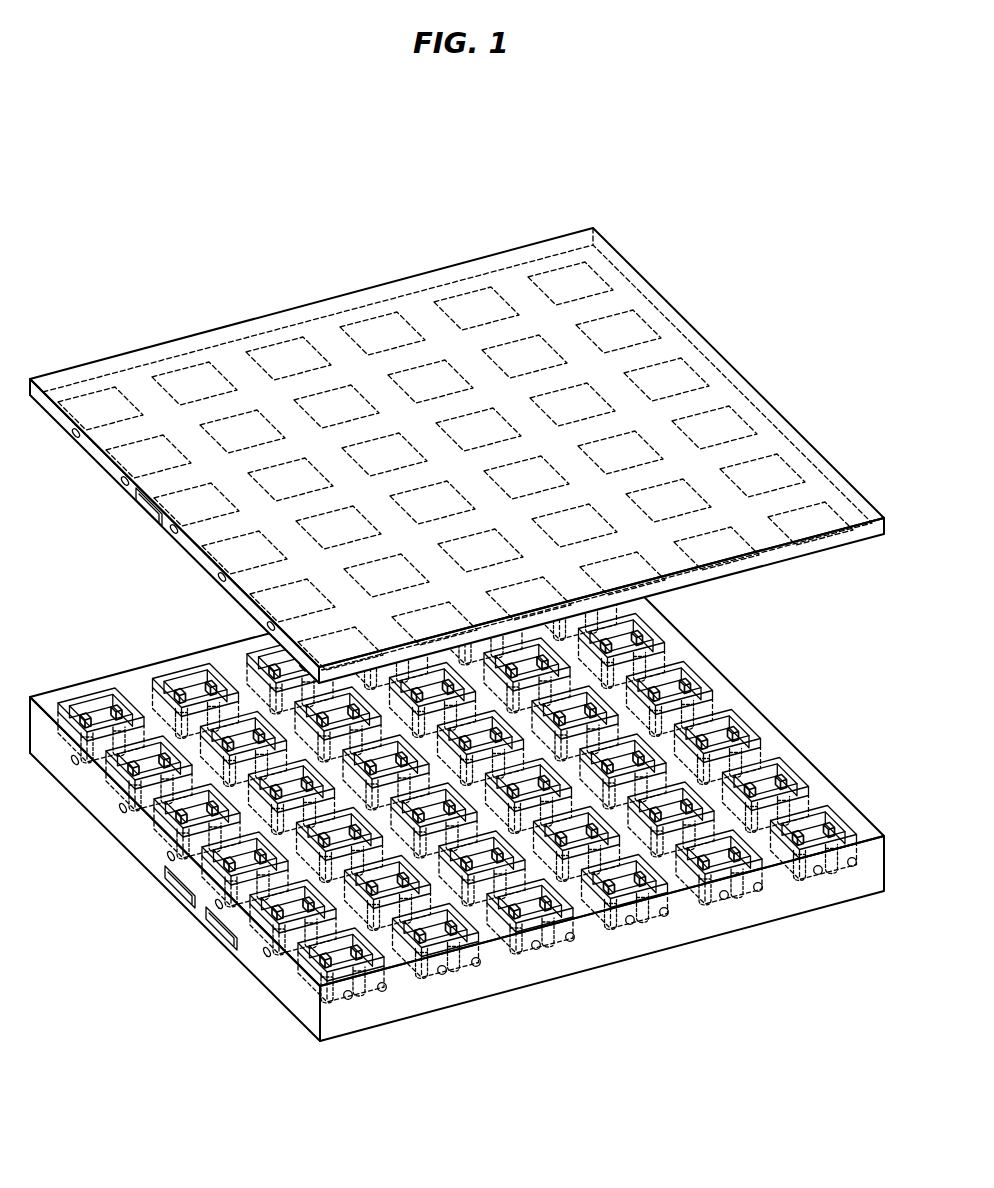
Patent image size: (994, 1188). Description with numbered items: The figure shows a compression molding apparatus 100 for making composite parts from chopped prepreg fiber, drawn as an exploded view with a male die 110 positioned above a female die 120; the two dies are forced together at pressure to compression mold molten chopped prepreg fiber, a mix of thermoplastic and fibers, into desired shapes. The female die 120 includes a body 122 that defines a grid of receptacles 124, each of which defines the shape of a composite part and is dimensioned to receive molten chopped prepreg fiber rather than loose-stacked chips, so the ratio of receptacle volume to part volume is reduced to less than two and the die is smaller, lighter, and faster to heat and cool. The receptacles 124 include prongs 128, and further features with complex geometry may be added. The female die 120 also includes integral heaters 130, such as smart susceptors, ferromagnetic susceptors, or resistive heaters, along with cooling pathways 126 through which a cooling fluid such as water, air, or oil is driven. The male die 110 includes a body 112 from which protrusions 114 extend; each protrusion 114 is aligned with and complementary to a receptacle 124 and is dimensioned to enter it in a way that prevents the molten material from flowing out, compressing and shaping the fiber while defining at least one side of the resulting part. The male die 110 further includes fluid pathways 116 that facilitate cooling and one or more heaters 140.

The compression molding apparatus 100 is at (177, 194).
The male die 110 is at (783, 394).
The body 112 is at (736, 372).
The protrusions 114 is at (651, 318).
The fluid pathways 116 is at (72, 436).
The heaters 140 is at (150, 502).
The female die 120 is at (790, 724).
The body 122 is at (719, 697).
The receptacles 124 is at (834, 808).
The cooling pathways 126 is at (122, 812).
The prongs 128 is at (724, 863).
The integral heaters 130 is at (214, 937).